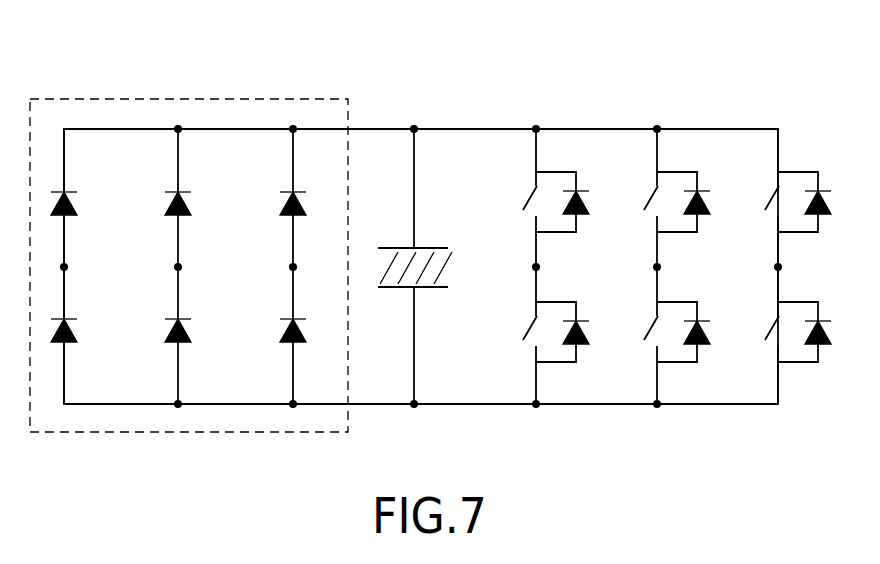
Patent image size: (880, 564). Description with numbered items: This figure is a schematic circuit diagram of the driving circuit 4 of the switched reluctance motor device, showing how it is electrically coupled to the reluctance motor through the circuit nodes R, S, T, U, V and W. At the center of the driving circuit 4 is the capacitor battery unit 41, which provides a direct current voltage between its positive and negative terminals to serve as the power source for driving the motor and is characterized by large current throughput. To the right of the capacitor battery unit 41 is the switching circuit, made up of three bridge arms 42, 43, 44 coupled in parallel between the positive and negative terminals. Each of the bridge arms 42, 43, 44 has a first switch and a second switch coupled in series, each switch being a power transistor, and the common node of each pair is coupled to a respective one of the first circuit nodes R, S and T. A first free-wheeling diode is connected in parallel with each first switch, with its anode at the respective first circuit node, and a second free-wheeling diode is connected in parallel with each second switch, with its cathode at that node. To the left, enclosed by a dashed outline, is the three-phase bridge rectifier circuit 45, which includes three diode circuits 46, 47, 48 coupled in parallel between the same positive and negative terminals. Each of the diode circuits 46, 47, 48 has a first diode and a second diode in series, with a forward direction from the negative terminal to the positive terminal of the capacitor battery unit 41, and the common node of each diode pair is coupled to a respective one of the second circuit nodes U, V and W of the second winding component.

The driving circuit 4 is at (774, 86).
The capacitor battery unit 41 is at (396, 247).
The bridge arm 42 is at (514, 166).
The bridge arm 43 is at (634, 166).
The bridge arm 44 is at (757, 166).
The three-phase bridge rectifier circuit 45 is at (70, 97).
The diode circuit 46 is at (80, 168).
The diode circuit 47 is at (194, 168).
The diode circuit 48 is at (309, 168).